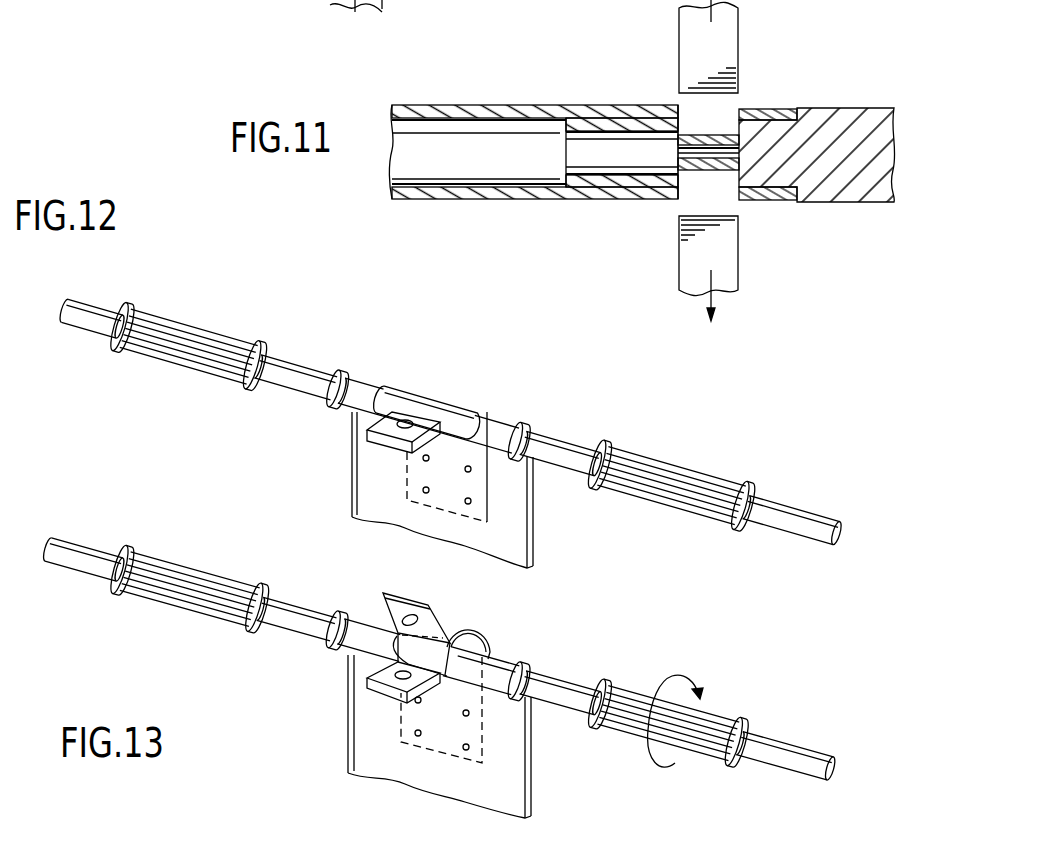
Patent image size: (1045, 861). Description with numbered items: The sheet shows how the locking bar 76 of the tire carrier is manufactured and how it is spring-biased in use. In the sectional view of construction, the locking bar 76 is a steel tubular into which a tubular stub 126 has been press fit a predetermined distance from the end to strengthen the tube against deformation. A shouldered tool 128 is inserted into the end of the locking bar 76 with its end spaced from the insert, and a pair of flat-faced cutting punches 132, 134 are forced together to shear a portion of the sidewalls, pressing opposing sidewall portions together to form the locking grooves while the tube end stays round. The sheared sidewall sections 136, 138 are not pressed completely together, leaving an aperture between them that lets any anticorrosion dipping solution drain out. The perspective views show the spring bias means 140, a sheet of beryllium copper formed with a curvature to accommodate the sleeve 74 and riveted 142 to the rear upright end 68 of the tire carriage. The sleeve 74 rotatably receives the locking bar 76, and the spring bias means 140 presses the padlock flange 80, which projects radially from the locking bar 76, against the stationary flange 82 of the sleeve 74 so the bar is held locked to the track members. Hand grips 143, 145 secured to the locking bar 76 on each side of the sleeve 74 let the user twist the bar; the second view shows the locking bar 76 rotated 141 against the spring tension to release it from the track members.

In FIG. 12, the rear upright end 68 is at (537, 495).
In FIG. 13, the rear upright end 68 is at (533, 740).
In FIG. 12, the sleeve 74 is at (510, 412).
In FIG. 13, the sleeve 74 is at (510, 656).
In FIG. 11, the locking bar 76 is at (478, 104).
In FIG. 12, the locking bar 76 is at (565, 448).
In FIG. 13, the locking bar 76 is at (439, 659).
In FIG. 12, the padlock flange 80 is at (388, 413).
In FIG. 13, the padlock flange 80 is at (413, 597).
In FIG. 12, the stationary flange 82 is at (383, 443).
In FIG. 13, the stationary flange 82 is at (380, 688).
In FIG. 11, the stub 126 is at (594, 118).
In FIG. 11, the shouldered tool 128 is at (848, 115).
In FIG. 11, the cutting punch 132 is at (679, 32).
In FIG. 11, the cutting punch 134 is at (733, 256).
In FIG. 11, the sidewall section 136 is at (720, 136).
In FIG. 11, the sidewall section 138 is at (700, 172).
In FIG. 12, the spring bias means 140 is at (445, 392).
In FIG. 13, the spring bias means 140 is at (457, 617).
In FIG. 13, the rotation of the locking bar 141 is at (675, 741).
In FIG. 12, the rivets 142 is at (472, 503).
In FIG. 13, the rivets 142 is at (482, 749).
In FIG. 12, the hand grip 143 is at (695, 468).
In FIG. 13, the hand grip 143 is at (638, 687).
In FIG. 12, the hand grip 145 is at (183, 322).
In FIG. 13, the hand grip 145 is at (166, 560).